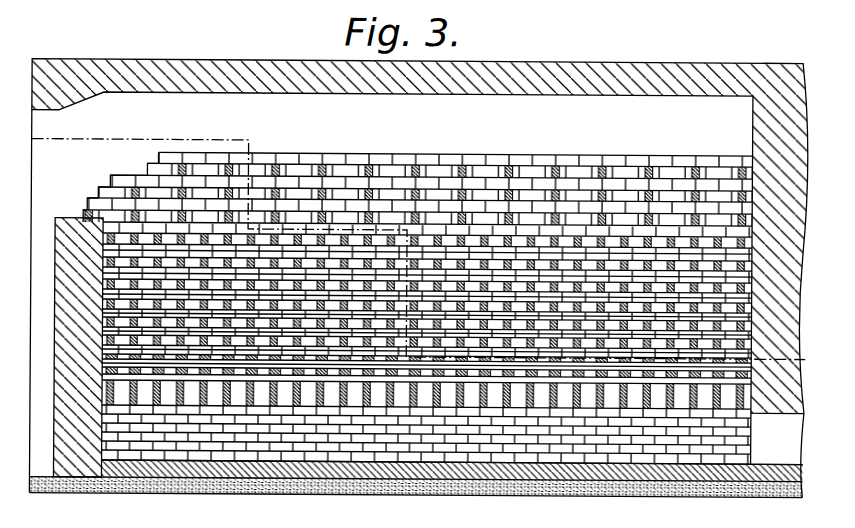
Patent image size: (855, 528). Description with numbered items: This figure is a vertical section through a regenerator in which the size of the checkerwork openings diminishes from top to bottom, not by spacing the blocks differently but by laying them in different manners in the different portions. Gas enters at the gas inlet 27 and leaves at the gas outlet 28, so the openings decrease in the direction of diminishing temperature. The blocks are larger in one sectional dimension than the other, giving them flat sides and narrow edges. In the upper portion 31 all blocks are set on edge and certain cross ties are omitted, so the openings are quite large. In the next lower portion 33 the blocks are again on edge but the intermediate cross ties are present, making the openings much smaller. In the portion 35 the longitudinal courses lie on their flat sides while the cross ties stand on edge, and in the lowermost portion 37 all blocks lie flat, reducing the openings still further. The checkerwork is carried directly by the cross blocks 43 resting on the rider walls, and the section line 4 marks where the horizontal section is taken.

The section line 4— 4 is at (809, 357).
The gas inlet 27 is at (50, 301).
The gas outlet 28 is at (777, 438).
The upper portion of the structure 31 is at (339, 179).
The next lower portion of the structure 33 is at (143, 252).
The next lower portion of the structure 35 is at (143, 327).
The lowermost portion of the structure 37 is at (121, 368).
The cross blocks 43 is at (225, 405).